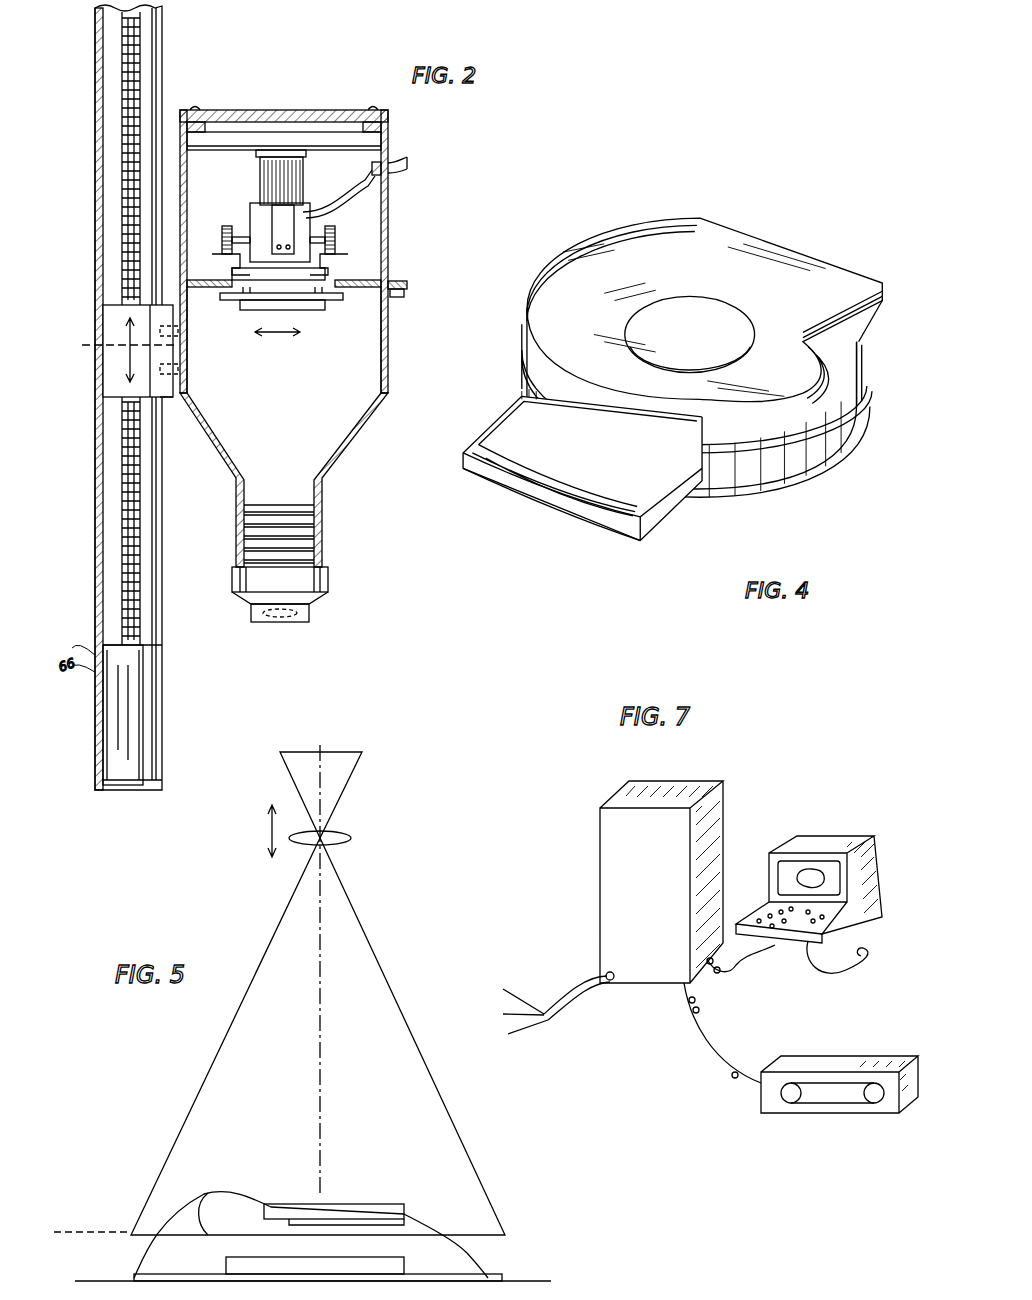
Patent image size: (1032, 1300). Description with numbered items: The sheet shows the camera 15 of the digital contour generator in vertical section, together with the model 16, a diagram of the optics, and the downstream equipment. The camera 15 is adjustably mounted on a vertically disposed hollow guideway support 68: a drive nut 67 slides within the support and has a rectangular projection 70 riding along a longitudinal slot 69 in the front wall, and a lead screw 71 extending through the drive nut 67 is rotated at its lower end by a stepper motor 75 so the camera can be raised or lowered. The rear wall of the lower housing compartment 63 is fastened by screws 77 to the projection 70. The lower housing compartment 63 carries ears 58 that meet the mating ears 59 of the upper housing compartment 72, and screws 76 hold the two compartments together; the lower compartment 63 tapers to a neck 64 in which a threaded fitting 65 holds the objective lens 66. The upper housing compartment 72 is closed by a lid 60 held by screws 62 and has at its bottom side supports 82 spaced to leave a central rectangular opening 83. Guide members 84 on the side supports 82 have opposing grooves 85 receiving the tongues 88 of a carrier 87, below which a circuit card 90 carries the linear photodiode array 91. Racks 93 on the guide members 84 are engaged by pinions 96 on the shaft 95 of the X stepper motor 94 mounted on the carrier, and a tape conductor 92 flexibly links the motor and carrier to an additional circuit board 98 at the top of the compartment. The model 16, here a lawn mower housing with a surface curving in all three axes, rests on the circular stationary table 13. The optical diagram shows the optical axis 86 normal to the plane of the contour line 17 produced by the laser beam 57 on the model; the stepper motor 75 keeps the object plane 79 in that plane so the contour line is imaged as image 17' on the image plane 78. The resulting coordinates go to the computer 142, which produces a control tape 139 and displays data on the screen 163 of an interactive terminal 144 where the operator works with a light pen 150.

In FIG. 2, the hollow guideway support 68 is at (83, 84).
In FIG. 2, the longitudinal slot 69 is at (162, 72).
In FIG. 2, the lead screw 71 is at (122, 132).
In FIG. 2, the screws 77 is at (100, 338).
In FIG. 2, the drive nut 67 is at (110, 372).
In FIG. 2, the rectangular projection 70 is at (168, 400).
In FIG. 2, the stepper motor 75 is at (145, 708).
In FIG. 2, the additional circuit board 98 is at (222, 146).
In FIG. 2, the lid 60 is at (301, 111).
In FIG. 2, the screws 62 is at (374, 110).
In FIG. 2, the tape conductor 92 is at (300, 178).
In FIG. 2, the upper housing compartment 72 is at (401, 167).
In FIG. 2, the camera 15 is at (411, 216).
In FIG. 2, the pinions 96 is at (332, 228).
In FIG. 2, the shaft 95 is at (240, 237).
In FIG. 2, the X stepper motor 94 is at (306, 206).
In FIG. 2, the racks 93 is at (328, 265).
In FIG. 2, the guide members 84 is at (346, 270).
In FIG. 2, the grooves 85 is at (253, 268).
In FIG. 2, the screws 76 is at (372, 284).
In FIG. 2, the mating ears 59 is at (396, 284).
In FIG. 2, the ears 58 is at (396, 297).
In FIG. 2, the side supports 82 is at (364, 301).
In FIG. 2, the central rectangular opening 83 is at (236, 301).
In FIG. 2, the carrier 87 is at (260, 320).
In FIG. 2, the circuit card 90 is at (294, 305).
In FIG. 2, the linear photodiode array 91 is at (282, 322).
In FIG. 2, the tongues 88 is at (323, 305).
In FIG. 2, the lower housing compartment 63 is at (366, 428).
In FIG. 2, the fitting 65 is at (322, 532).
In FIG. 2, the neck 64 is at (322, 549).
In FIG. 2, the objective lens 66 is at (262, 623).
In FIG. 5, the objective lens 66 is at (352, 838).
In FIG. 4, the model 16 is at (619, 227).
In FIG. 5, the model 16 is at (490, 1256).
In FIG. 5, the optical axis 86 is at (321, 1050).
In FIG. 5, the image 17' is at (334, 781).
In FIG. 5, the image plane 78 is at (282, 752).
In FIG. 5, the laser beam of light 57 is at (80, 1232).
In FIG. 5, the contour line 17 is at (311, 1225).
In FIG. 5, the object plane 79 is at (465, 1236).
In FIG. 5, the table 13 is at (550, 1282).
In FIG. 7, the computer 142 is at (705, 810).
In FIG. 7, the interactive terminal 144 is at (870, 851).
In FIG. 7, the screen 163 is at (798, 862).
In FIG. 7, the light pen 150 is at (866, 953).
In FIG. 7, the tape 139 is at (806, 1103).